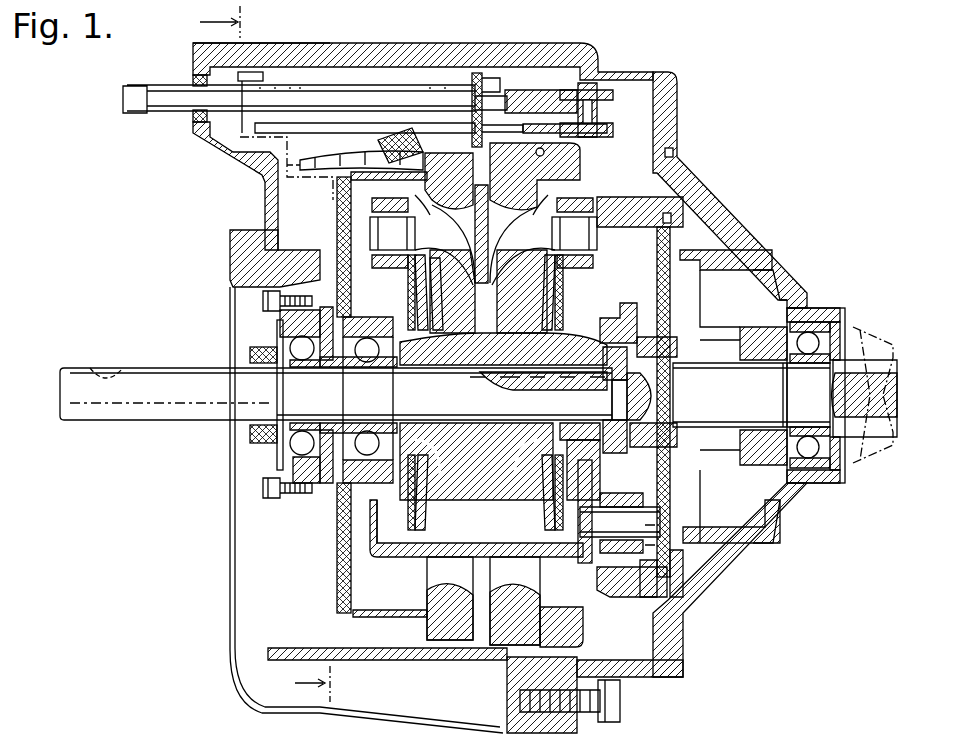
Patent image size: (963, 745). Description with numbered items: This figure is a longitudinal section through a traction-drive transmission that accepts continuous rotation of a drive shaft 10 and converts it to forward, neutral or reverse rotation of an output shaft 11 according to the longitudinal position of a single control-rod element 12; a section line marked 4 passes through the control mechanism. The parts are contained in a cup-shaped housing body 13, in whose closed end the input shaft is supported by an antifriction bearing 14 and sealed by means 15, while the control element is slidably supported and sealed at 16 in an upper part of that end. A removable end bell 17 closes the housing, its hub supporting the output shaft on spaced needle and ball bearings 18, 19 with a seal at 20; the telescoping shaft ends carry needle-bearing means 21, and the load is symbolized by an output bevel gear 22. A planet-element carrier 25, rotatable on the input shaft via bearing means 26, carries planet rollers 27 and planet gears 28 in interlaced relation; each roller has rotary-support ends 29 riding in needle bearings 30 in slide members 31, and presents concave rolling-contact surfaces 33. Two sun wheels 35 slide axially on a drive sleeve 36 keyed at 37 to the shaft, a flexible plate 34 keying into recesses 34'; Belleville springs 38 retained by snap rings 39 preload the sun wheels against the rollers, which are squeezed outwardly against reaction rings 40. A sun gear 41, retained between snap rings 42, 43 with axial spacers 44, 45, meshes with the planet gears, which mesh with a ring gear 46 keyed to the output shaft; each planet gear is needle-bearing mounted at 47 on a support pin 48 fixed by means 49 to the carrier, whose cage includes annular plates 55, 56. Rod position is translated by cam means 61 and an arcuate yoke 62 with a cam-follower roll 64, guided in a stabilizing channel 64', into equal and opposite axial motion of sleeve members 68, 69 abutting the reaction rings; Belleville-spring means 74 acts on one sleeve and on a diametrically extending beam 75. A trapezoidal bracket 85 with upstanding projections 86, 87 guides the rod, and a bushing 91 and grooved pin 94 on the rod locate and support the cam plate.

The section line 4- 4 is at (280, 354).
The drive shaft 10 is at (142, 378).
The output shaft 11 is at (728, 399).
The control-rod element 12 is at (180, 85).
The housing body 13 is at (388, 105).
The antifriction bearing 14 is at (290, 450).
The sealing means 15 is at (255, 430).
The seal 16 is at (195, 115).
The end bell 17 is at (727, 207).
The needle bearing 18 is at (707, 355).
The ball bearing 19 is at (808, 335).
The seal 20 is at (747, 358).
The needle-bearing means 21 is at (650, 355).
The output bevel gear 22 is at (893, 347).
The planet-element carrier 25 is at (381, 562).
The bearing means 26 is at (388, 403).
The planet roller 27 is at (485, 235).
The planet gear 28 is at (673, 500).
The rotary-support ends 29 is at (398, 234).
The needle bearings 30 is at (592, 212).
The slide members 31 is at (405, 203).
The rolling-contact surface 33 is at (471, 176).
The plate 34 is at (483, 392).
The key recess 34' is at (446, 294).
The sun wheel 35 is at (450, 322).
The drive sleeve 36 is at (463, 347).
The key 37 is at (547, 370).
The Belleville springs 38 is at (577, 290).
The snap rings 39 is at (558, 325).
The reaction ring 40 is at (442, 621).
The sun gear 41 is at (662, 335).
The snap ring 42 is at (613, 390).
The snap ring 43 is at (272, 372).
The axial spacer 44 is at (330, 370).
The axial spacer 45 is at (397, 365).
The ring gear 46 is at (627, 203).
The needle bearing 47 is at (603, 592).
The support pin 48 is at (672, 522).
The retaining means 49 is at (545, 563).
The annular plate 55 is at (601, 488).
The annular plate 56 is at (662, 487).
The cam means 61 is at (432, 108).
The arcuate yoke 62 is at (363, 154).
The cam-follower roll 64 is at (431, 71).
The stabilizing channel 64' is at (303, 185).
The sleeve member 68 is at (360, 615).
The sleeve member 69 is at (590, 634).
The Belleville-spring means 74 is at (327, 217).
The beam 75 is at (279, 237).
The trapezoidal bracket 85 is at (441, 63).
The upstanding projection 86 is at (282, 45).
The upstanding projection 87 is at (510, 45).
The bushing 91 is at (600, 118).
The grooved pin 94 is at (335, 120).